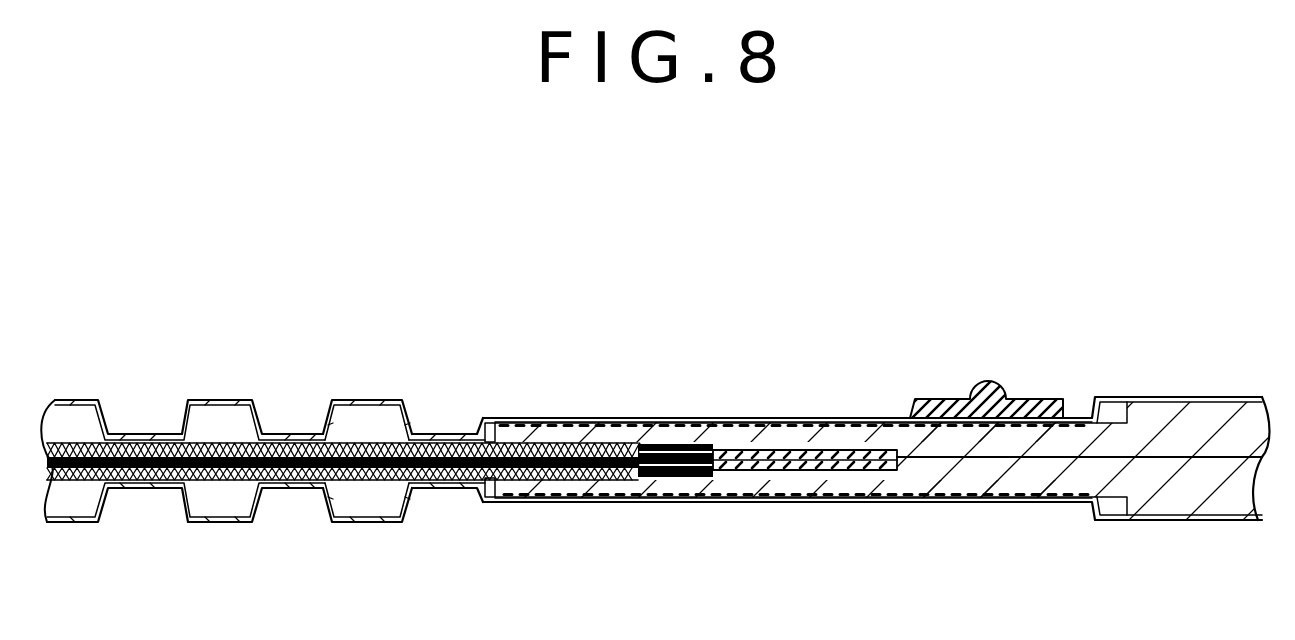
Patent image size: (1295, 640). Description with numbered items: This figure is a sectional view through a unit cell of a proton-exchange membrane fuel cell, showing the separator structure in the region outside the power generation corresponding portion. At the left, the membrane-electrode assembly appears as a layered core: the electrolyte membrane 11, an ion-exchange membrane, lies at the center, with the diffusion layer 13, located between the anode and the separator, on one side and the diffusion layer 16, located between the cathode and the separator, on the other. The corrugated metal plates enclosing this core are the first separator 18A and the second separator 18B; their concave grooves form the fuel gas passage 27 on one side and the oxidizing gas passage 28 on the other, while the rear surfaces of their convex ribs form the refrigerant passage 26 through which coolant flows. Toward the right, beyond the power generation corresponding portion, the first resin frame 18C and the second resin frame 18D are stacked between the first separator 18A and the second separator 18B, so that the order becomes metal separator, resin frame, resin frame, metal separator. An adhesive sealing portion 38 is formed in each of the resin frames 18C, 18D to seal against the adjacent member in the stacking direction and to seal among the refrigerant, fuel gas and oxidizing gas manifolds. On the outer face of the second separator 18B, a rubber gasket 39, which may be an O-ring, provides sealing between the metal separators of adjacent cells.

The electrolyte membrane 11 is at (52, 447).
The diffusion layer 13 is at (68, 480).
The diffusion layer 16 is at (90, 450).
The refrigerant passage 26 is at (287, 432).
The fuel gas passage 27 is at (362, 492).
The oxidizing gas passage 28 is at (367, 422).
The first separator 18A is at (488, 507).
The second separator 18B is at (483, 420).
The first resin frame 18C is at (1162, 497).
The second resin frame 18D is at (1143, 417).
The adhesive sealing portion 38 is at (623, 420).
The rubber gasket 39 is at (990, 380).